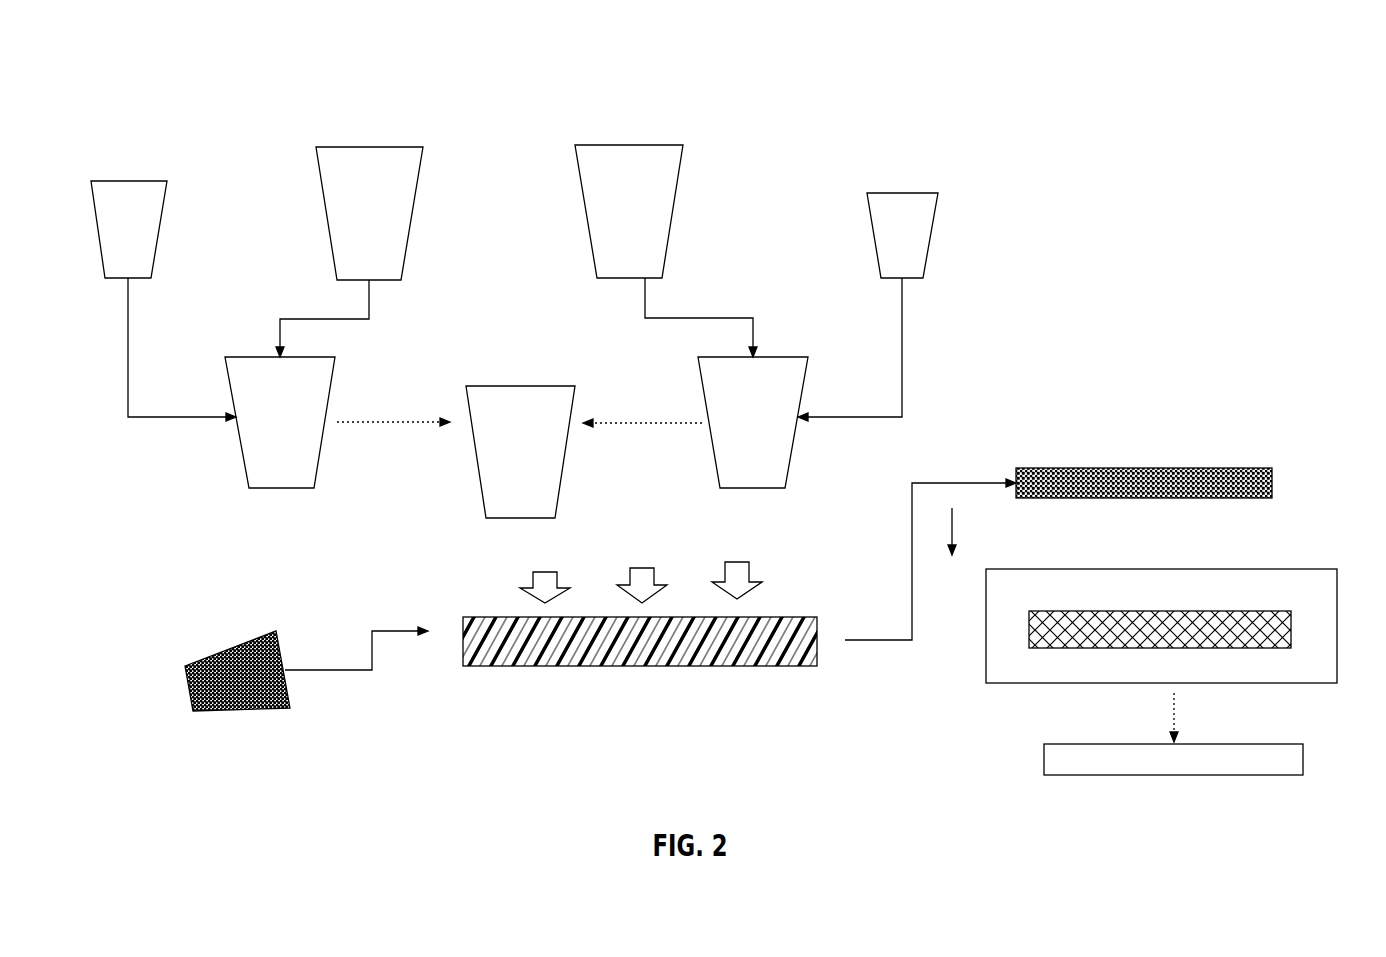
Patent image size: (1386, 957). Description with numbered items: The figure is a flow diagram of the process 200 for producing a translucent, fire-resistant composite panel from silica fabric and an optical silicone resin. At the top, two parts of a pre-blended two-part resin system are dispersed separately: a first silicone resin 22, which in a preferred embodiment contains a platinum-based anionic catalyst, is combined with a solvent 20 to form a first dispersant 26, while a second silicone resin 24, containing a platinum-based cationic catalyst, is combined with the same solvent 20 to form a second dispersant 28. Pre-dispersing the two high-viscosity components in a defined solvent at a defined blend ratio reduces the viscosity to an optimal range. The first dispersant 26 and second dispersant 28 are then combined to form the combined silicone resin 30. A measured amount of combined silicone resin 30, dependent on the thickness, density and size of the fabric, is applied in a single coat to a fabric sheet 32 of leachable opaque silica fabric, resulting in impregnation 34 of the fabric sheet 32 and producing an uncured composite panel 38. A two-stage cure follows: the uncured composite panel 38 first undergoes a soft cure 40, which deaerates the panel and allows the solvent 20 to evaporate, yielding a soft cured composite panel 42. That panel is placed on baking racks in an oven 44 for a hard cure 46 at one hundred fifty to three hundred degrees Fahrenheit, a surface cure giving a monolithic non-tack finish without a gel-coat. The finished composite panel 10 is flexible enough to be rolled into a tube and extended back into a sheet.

The process 200 is at (370, 73).
The solvent 20 is at (113, 233).
The first silicone resin 22 is at (353, 211).
The second silicone resin 24 is at (613, 214).
The first dispersant 26 is at (265, 434).
The second dispersant 28 is at (737, 422).
The combined silicone resin 30 is at (505, 466).
The fabric sheet 32 is at (523, 667).
The impregnation 34 is at (438, 582).
The uncured composite panel 38 is at (1104, 465).
The soft cure 40 is at (1097, 546).
The soft cured composite panel 42 is at (1292, 629).
The oven 44 is at (986, 657).
The hard cure 46 is at (1195, 721).
The composite panel 10 is at (1044, 755).